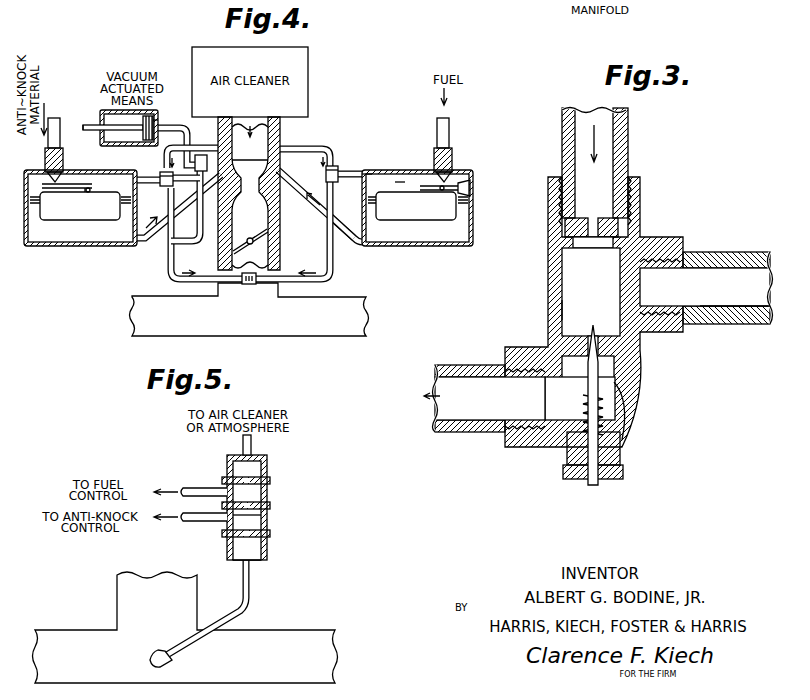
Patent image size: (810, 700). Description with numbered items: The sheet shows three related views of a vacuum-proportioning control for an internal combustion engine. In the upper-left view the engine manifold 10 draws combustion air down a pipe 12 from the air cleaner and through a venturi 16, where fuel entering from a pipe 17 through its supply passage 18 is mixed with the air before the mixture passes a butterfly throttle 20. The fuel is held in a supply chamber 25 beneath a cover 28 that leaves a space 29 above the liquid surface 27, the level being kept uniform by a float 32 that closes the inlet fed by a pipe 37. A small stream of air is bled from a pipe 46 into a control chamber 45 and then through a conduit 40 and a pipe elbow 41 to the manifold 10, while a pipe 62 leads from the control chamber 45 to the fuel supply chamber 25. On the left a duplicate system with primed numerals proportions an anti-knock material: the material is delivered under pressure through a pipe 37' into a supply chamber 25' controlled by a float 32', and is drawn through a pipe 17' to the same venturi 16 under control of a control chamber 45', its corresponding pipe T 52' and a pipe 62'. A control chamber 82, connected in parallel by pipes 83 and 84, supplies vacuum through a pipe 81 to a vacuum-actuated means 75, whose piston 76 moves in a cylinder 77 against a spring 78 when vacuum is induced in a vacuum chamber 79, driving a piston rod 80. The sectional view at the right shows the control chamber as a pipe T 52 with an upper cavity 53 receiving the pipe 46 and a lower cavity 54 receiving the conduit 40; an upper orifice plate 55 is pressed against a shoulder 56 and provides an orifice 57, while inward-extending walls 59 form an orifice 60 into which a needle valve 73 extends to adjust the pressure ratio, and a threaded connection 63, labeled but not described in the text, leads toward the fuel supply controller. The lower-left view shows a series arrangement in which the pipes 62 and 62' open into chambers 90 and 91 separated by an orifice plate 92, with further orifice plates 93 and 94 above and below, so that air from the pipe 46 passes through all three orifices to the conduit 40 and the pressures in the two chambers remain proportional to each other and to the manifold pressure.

In FIG. 4, the manifold 10 is at (130, 316).
In FIG. 5, the manifold 10 is at (70, 635).
In FIG. 4, the pipe 12 is at (275, 232).
In FIG. 4, the venturi 16 is at (236, 200).
In FIG. 4, the pipe 17 is at (320, 206).
In FIG. 4, the pipe 17' is at (176, 226).
In FIG. 4, the supply passage 18 is at (344, 240).
In FIG. 4, the throttle 20 is at (268, 244).
In FIG. 4, the supply chamber 25 is at (417, 224).
In FIG. 4, the supply chamber 25' is at (80, 225).
In FIG. 4, the surface 27 is at (466, 192).
In FIG. 4, the cover 28 is at (370, 173).
In FIG. 4, the space 29 is at (400, 182).
In FIG. 4, the float 32 is at (440, 206).
In FIG. 4, the float 32' is at (80, 232).
In FIG. 4, the pipe 37 is at (462, 146).
In FIG. 4, the pipe 37' is at (61, 113).
In FIG. 4, the conduit 40 is at (332, 270).
In FIG. 3, the conduit 40 is at (462, 366).
In FIG. 5, the conduit 40 is at (248, 583).
In FIG. 4, the pipe elbow 41 is at (248, 285).
In FIG. 4, the control chamber 45 is at (347, 147).
In FIG. 3, the control chamber 45 is at (536, 299).
In FIG. 4, the control chamber 45' is at (181, 181).
In FIG. 4, the pipe 46 is at (322, 148).
In FIG. 3, the pipe 46 is at (625, 140).
In FIG. 5, the pipe 46 is at (243, 441).
In FIG. 4, the pipe T 52 is at (316, 168).
In FIG. 3, the pipe T 52 is at (595, 312).
In FIG. 4, the anti-knock valve body 52' is at (157, 193).
In FIG. 3, the upper cavity 53 is at (626, 196).
In FIG. 3, the lower cavity 54 is at (500, 425).
In FIG. 3, the upper orifice plate 55 is at (572, 226).
In FIG. 3, the shoulder 56 is at (564, 246).
In FIG. 3, the orifice 57 is at (594, 249).
In FIG. 3, the inward-extending walls 59 is at (572, 332).
In FIG. 3, the orifice 60 is at (600, 340).
In FIG. 4, the pipe 62 is at (351, 195).
In FIG. 3, the pipe 62 is at (735, 332).
In FIG. 5, the pipe 62 is at (204, 477).
In FIG. 4, the pipe 62' is at (151, 181).
In FIG. 5, the pipe 62' is at (204, 534).
In FIG. 3, the fitting 63 is at (688, 254).
In FIG. 3, the needle valve 73 is at (605, 358).
In FIG. 4, the vacuum-actuated means 75 is at (171, 105).
In FIG. 4, the piston 76 is at (112, 132).
In FIG. 4, the cylinder 77 is at (126, 147).
In FIG. 4, the spring 78 is at (157, 120).
In FIG. 4, the vacuum chamber 79 is at (148, 146).
In FIG. 4, the piston rod 80 is at (92, 126).
In FIG. 4, the pipe 81 is at (190, 134).
In FIG. 4, the control chamber 82 is at (207, 164).
In FIG. 4, the pipe 83 is at (208, 157).
In FIG. 4, the pipe 84 is at (196, 243).
In FIG. 5, the chamber 90 is at (266, 492).
In FIG. 5, the chamber 91 is at (266, 521).
In FIG. 5, the orifice plate 92 is at (268, 505).
In FIG. 5, the orifice plate 93 is at (260, 478).
In FIG. 5, the orifice plate 94 is at (266, 542).